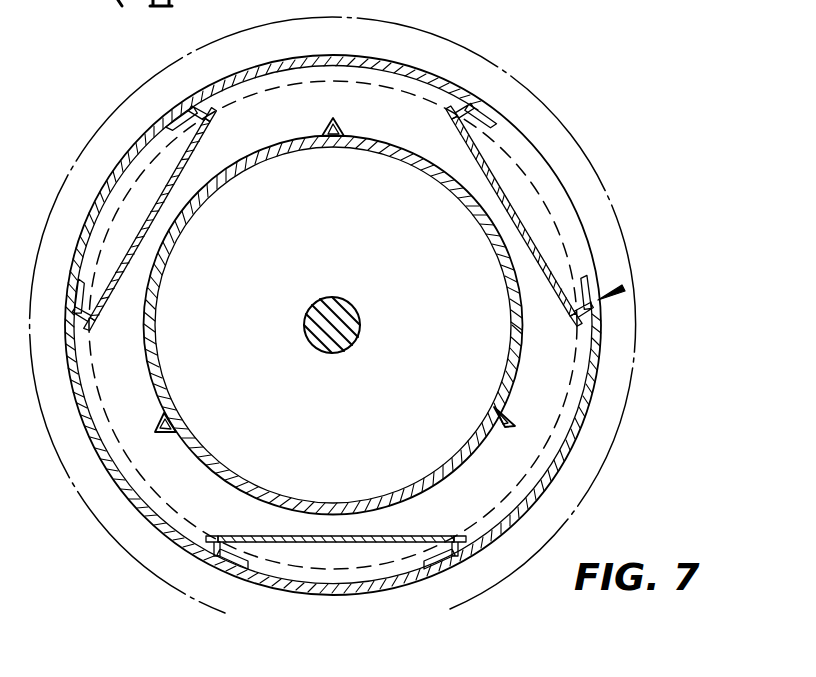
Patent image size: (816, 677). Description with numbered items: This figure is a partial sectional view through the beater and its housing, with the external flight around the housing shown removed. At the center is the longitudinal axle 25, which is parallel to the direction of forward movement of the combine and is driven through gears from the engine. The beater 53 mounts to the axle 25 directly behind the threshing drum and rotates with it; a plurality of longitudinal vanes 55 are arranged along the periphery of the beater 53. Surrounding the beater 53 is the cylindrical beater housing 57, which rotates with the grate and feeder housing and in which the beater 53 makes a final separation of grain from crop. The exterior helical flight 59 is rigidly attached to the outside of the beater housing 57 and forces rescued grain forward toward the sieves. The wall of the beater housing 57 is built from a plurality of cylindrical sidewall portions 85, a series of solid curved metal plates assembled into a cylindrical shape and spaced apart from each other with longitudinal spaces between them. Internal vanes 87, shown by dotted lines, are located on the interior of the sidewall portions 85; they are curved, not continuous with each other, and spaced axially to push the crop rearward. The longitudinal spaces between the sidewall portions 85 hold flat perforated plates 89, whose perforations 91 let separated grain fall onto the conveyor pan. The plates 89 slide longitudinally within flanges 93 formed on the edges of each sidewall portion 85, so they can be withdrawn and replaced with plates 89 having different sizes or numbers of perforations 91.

The longitudinal axle 25 is at (349, 304).
The beater 53 is at (471, 192).
The longitudinal vanes 55 is at (336, 126).
The beater housing 57 is at (608, 298).
The exterior helical flight 59 is at (637, 347).
The cylindrical sidewall portions 85 is at (576, 442).
The internal vanes 87 is at (541, 470).
The flat perforated plates 89 is at (531, 240).
The perforations 91 is at (518, 218).
The flanges 93 is at (470, 101).